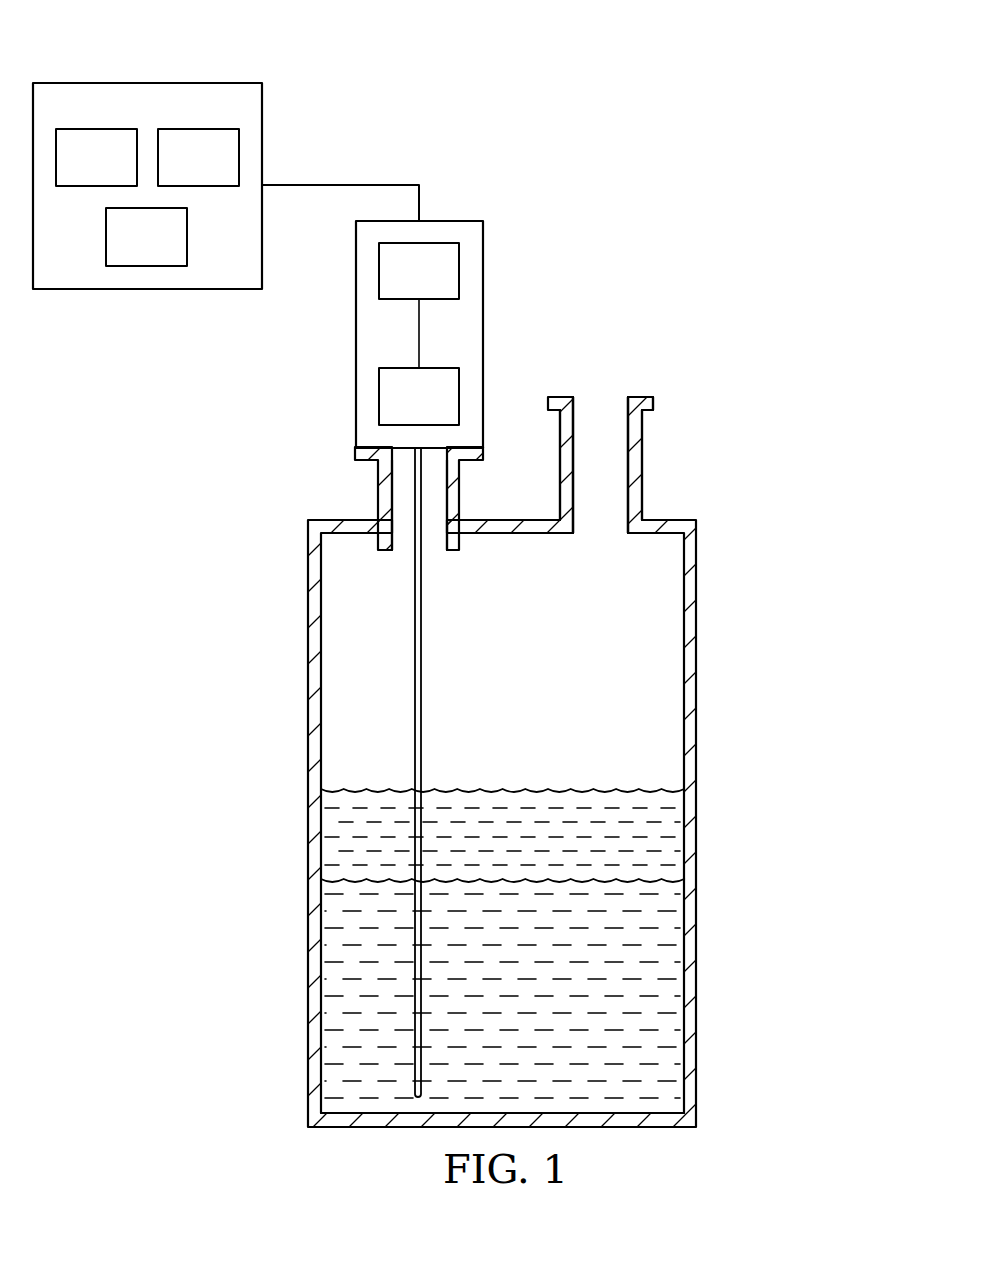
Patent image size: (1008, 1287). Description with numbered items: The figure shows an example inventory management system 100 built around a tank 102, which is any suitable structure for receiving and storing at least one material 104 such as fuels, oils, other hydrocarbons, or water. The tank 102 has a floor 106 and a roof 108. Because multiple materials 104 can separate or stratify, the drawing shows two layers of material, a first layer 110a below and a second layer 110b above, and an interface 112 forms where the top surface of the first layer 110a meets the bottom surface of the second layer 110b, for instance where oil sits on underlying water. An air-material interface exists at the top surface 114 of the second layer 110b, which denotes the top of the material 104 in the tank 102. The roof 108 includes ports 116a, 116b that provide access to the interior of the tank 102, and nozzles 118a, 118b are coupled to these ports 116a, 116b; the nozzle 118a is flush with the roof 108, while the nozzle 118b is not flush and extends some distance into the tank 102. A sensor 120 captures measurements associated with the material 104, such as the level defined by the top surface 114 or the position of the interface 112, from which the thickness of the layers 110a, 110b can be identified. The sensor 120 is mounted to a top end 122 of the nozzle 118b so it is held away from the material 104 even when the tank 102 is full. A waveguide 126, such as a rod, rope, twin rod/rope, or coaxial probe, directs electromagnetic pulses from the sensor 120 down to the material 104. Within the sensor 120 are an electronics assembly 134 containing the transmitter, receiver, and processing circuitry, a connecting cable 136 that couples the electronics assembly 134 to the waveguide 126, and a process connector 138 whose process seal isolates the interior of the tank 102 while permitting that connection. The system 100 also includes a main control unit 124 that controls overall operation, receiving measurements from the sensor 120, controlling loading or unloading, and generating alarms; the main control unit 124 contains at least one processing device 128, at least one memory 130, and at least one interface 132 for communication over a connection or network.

The inventory management system 100 is at (630, 61).
The tank 102 is at (544, 762).
The material 104 is at (555, 904).
The floor 106 is at (663, 1107).
The roof 108 is at (510, 501).
The first layer 110a is at (676, 1040).
The second layer 110b is at (677, 817).
The interface 112 is at (648, 884).
The top surface 114 is at (538, 792).
The port 116a is at (606, 524).
The port 116b is at (403, 524).
The nozzle 118a is at (644, 458).
The nozzle 118b is at (461, 503).
The sensor 120 is at (433, 334).
The top end 122 is at (378, 498).
The main control unit 124 is at (147, 152).
The waveguide 126 is at (423, 663).
The processing device 128 is at (74, 170).
The memory 130 is at (176, 170).
The interface 132 is at (124, 250).
The electronics assembly 134 is at (396, 285).
The connecting cable 136 is at (419, 335).
The process connector 138 is at (396, 410).